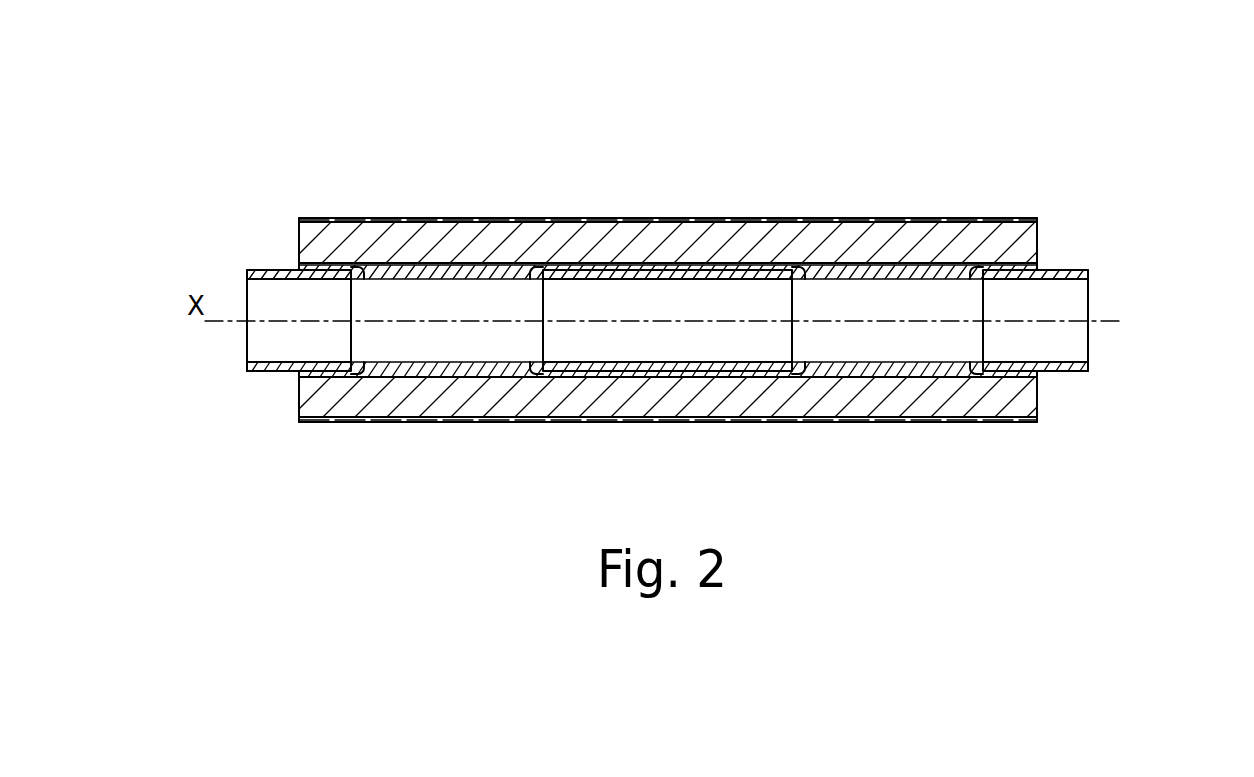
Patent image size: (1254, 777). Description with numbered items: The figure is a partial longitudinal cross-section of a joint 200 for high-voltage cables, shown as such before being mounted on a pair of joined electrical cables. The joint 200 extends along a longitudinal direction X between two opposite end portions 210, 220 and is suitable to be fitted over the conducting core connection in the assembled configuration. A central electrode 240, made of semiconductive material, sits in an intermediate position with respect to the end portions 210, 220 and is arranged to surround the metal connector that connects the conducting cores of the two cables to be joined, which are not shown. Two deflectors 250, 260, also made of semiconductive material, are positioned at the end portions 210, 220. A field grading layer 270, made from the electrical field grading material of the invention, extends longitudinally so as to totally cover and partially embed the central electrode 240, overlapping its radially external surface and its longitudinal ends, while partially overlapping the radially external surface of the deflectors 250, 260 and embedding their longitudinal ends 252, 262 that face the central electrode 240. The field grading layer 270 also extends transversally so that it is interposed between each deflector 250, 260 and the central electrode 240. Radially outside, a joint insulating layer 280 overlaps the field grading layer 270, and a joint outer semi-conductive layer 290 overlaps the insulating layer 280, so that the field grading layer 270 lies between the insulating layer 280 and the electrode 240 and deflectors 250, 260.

The joint 200 is at (648, 144).
The end portion 210 is at (261, 238).
The end portion 220 is at (1075, 245).
The central electrode 240 is at (707, 365).
The deflector 250 is at (245, 369).
The longitudinal end 252 is at (363, 272).
The deflector 260 is at (1088, 370).
The longitudinal end 262 is at (980, 276).
The field grading layer 270 is at (512, 272).
The joint insulating layer 280 is at (905, 235).
The joint outer semi-conductive layer 290 is at (380, 218).